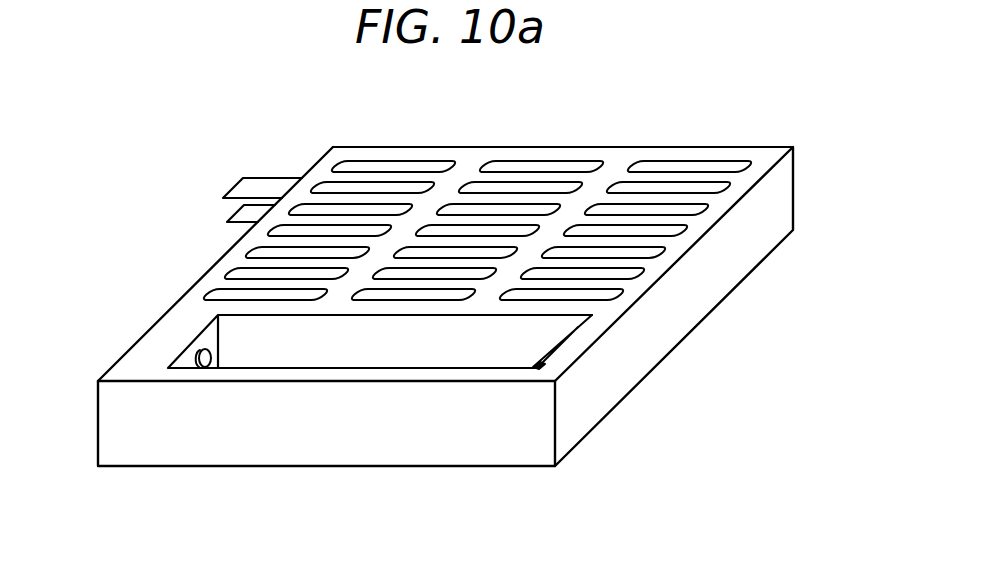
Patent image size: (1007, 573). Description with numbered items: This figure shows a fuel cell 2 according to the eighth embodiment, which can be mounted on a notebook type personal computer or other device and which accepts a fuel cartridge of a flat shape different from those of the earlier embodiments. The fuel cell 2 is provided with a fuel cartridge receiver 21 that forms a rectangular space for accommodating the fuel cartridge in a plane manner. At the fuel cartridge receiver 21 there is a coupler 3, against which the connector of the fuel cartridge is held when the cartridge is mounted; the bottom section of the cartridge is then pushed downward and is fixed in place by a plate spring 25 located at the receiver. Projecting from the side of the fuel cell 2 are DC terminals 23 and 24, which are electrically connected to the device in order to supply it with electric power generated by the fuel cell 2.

The fuel cell 2 is at (530, 147).
The fuel cartridge receiver 21 is at (315, 453).
The coupler 3 is at (206, 352).
The DC terminal 23 is at (260, 182).
The DC terminal 24 is at (247, 208).
The plate spring 25 is at (558, 347).